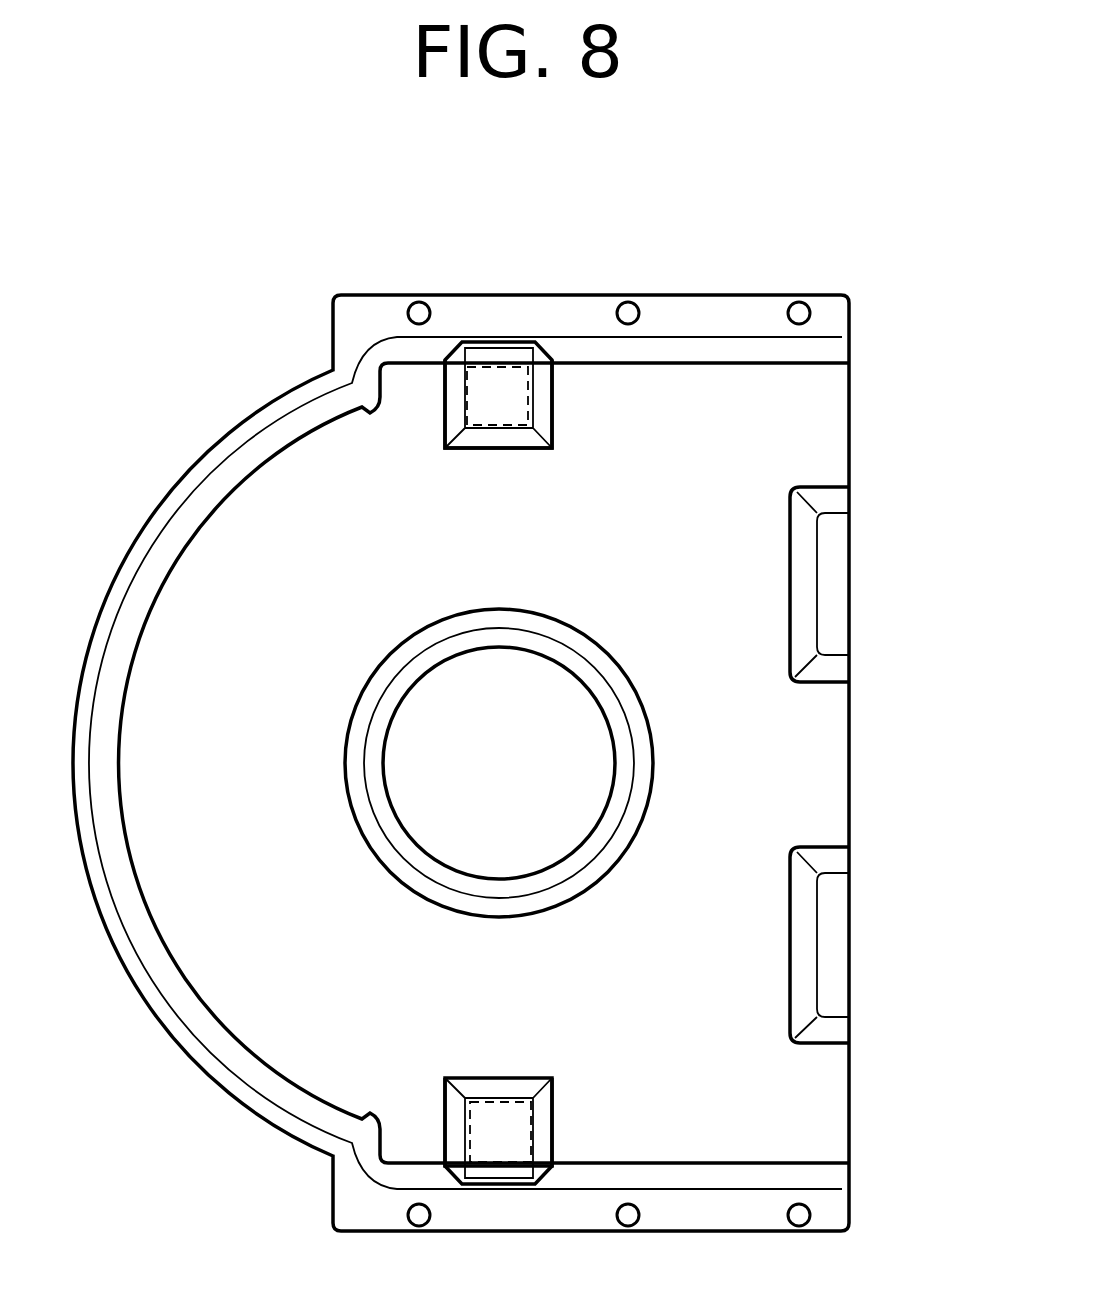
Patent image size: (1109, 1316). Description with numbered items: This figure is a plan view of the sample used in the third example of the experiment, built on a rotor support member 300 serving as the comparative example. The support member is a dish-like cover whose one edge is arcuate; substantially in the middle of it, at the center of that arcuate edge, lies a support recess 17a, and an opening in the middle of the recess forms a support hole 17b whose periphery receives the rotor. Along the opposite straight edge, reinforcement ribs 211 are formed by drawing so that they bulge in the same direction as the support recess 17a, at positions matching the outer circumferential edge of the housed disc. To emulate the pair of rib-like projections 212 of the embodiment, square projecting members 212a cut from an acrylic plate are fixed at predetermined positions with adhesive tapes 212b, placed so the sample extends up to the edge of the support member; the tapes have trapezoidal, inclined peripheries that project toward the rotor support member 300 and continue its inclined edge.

The rotor support member 300 is at (825, 425).
The reinforcement ribs 211 is at (823, 630).
The projections 212 is at (502, 410).
The projecting members 212a is at (502, 1118).
The adhesive tapes 212b is at (543, 413).
The support recess 17a is at (462, 883).
The support hole 17b is at (608, 795).